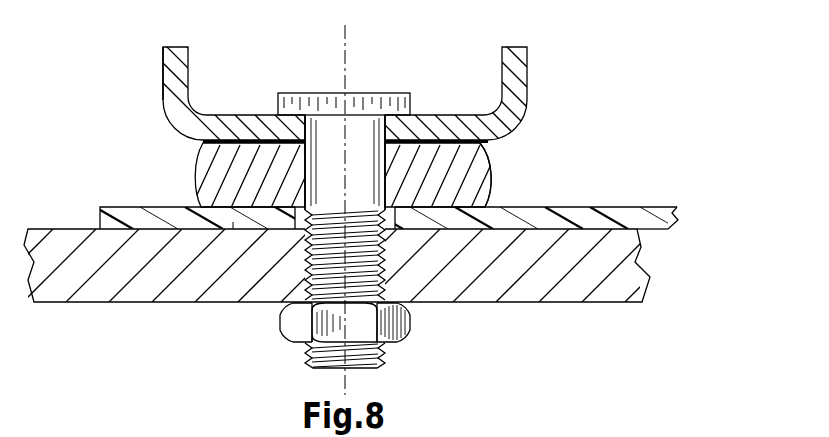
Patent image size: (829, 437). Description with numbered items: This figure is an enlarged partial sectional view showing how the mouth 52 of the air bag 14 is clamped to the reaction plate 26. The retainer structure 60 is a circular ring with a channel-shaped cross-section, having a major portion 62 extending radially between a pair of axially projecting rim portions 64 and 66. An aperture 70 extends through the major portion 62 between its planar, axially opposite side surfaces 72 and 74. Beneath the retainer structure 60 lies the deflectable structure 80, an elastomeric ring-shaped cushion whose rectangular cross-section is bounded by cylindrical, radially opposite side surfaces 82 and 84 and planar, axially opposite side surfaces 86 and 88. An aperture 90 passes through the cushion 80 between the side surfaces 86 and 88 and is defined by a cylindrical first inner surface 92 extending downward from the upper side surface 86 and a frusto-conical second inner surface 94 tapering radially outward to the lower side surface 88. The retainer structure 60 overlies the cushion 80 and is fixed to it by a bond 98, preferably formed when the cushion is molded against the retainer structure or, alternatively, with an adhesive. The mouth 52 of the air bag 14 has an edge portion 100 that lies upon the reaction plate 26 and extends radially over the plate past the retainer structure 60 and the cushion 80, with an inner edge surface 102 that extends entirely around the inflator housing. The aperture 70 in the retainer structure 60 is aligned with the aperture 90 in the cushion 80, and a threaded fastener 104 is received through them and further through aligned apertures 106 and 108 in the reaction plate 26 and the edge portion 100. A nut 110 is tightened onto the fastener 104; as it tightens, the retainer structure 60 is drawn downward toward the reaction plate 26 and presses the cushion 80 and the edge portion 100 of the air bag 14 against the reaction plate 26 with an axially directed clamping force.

The air bag 14 is at (696, 210).
The reaction plate 26 is at (666, 283).
The mouth 52 is at (583, 207).
The retainer structure 60 is at (146, 48).
The major portion 62 is at (215, 127).
The rim portion 64 is at (163, 83).
The rim portion 66 is at (527, 77).
The aperture 70 is at (306, 100).
The side surface 72 is at (428, 113).
The side surface 74 is at (476, 150).
The deflectable structure 80 is at (185, 144).
The side surface 82 is at (197, 181).
The side surface 84 is at (493, 172).
The side surface 86 is at (483, 140).
The side surface 88 is at (472, 230).
The aperture 90 is at (330, 130).
The first inner surface 92 is at (380, 147).
The second inner surface 94 is at (298, 216).
The bond 98 is at (253, 130).
The edge portion 100 is at (233, 222).
The inner edge surface 102 is at (95, 218).
The threaded fastener 104 is at (368, 93).
The aperture 106 is at (363, 317).
The aperture 108 is at (332, 240).
The nut 110 is at (407, 338).